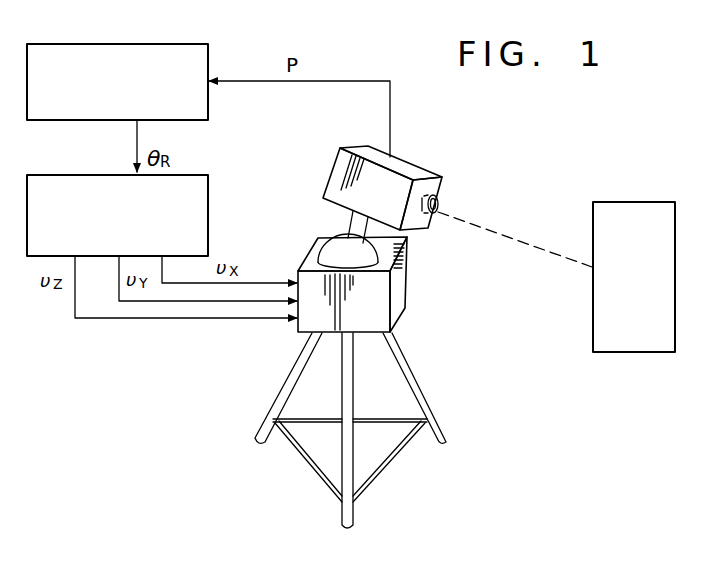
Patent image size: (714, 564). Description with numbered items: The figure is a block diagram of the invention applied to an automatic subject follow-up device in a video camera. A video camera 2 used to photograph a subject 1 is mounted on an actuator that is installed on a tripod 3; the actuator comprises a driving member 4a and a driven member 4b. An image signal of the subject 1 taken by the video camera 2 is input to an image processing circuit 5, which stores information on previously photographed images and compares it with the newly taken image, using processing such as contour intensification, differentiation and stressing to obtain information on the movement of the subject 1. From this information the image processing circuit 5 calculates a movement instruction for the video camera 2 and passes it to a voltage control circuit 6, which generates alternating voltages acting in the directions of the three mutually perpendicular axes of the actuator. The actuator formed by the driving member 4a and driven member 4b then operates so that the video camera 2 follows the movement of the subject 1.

The subject 1 is at (635, 163).
The video camera 2 is at (420, 163).
The tripod 3 is at (425, 398).
The driving member 4a is at (406, 284).
The driven member 4b is at (341, 238).
The image processing circuit 5 is at (100, 44).
The voltage control circuit 6 is at (208, 205).